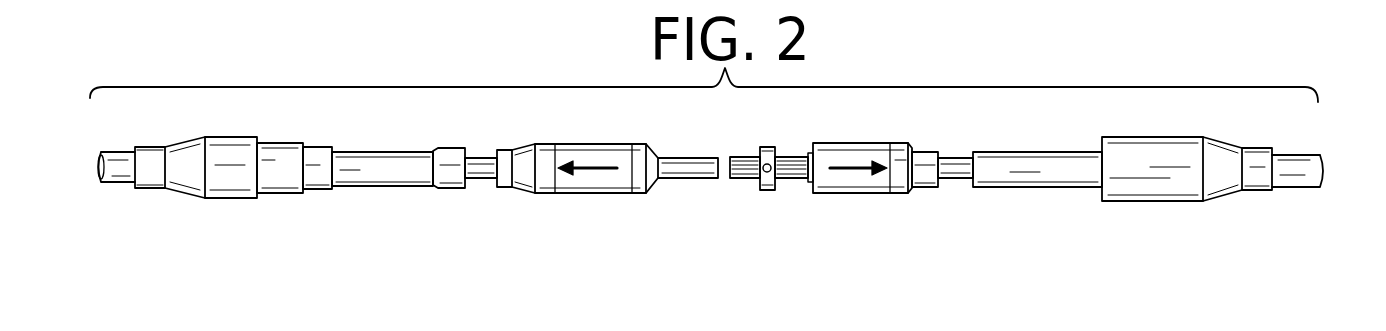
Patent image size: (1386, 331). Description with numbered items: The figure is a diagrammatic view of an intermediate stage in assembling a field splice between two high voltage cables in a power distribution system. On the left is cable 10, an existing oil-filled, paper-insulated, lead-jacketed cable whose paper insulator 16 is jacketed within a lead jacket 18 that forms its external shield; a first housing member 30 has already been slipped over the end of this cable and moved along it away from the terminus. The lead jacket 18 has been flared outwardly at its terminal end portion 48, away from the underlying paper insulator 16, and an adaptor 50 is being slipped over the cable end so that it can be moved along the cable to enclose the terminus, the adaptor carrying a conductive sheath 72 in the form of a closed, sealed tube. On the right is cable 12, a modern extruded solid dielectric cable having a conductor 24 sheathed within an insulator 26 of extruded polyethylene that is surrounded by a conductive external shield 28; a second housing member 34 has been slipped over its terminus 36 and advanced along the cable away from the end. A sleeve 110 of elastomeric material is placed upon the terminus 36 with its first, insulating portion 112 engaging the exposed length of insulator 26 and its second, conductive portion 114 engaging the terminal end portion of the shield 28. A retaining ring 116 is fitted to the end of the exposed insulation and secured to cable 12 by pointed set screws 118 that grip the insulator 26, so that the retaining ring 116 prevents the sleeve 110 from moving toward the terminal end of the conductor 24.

The cable 10 is at (118, 151).
The cable 12 is at (1293, 152).
The paper insulator 16 is at (480, 161).
The lead jacket 18 is at (368, 156).
The conductor 24 is at (746, 157).
The insulator 26 is at (955, 160).
The external shield 28 is at (1042, 160).
The first housing member 30 is at (215, 199).
The second housing member 34 is at (1162, 203).
The terminus 36 is at (740, 180).
The terminal end portion 48 is at (445, 189).
The adaptor 50 is at (575, 194).
The sheath 72 is at (692, 160).
The sleeve 110 is at (870, 195).
The insulating portion 112 is at (858, 144).
The conductive portion 114 is at (927, 190).
The retaining ring 116 is at (768, 192).
The set screws 118 is at (768, 160).